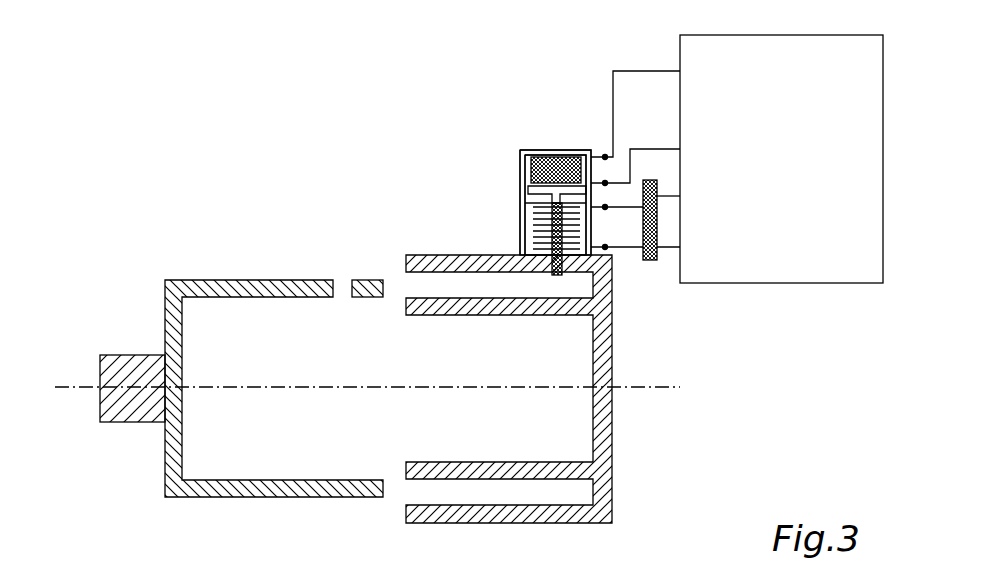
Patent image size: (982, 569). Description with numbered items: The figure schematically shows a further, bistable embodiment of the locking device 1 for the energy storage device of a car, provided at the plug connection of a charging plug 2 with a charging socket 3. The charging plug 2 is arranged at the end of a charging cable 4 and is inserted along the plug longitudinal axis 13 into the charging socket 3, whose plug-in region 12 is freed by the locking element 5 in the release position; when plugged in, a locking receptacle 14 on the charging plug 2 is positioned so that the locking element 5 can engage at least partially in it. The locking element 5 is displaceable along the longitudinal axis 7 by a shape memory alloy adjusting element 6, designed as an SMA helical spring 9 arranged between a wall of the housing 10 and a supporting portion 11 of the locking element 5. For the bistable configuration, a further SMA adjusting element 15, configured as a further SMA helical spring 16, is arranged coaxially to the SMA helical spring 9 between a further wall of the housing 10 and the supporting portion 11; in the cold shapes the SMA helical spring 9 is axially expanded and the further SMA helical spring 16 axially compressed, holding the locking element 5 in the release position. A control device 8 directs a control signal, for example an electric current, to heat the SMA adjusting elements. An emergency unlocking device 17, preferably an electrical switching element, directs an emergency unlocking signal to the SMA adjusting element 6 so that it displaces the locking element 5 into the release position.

The locking device 1 is at (572, 146).
The charging plug 2 is at (160, 501).
The charging socket 3 is at (614, 450).
The charging cable 4 is at (135, 352).
The locking element 5 is at (525, 201).
The shape memory alloy adjusting element 6 is at (525, 221).
The longitudinal axis 7 is at (558, 108).
The control device 8 is at (737, 159).
The SMA helical spring 9 is at (525, 241).
The housing 10 is at (523, 178).
The supporting portion 11 is at (523, 192).
The plug-in region 12 is at (416, 286).
The plug longitudinal axis 13 is at (80, 385).
The locking receptacle 14 is at (343, 289).
The further SMA adjusting element 15 is at (523, 158).
The further SMA helical spring 16 is at (557, 148).
The emergency unlocking device 17 is at (651, 264).